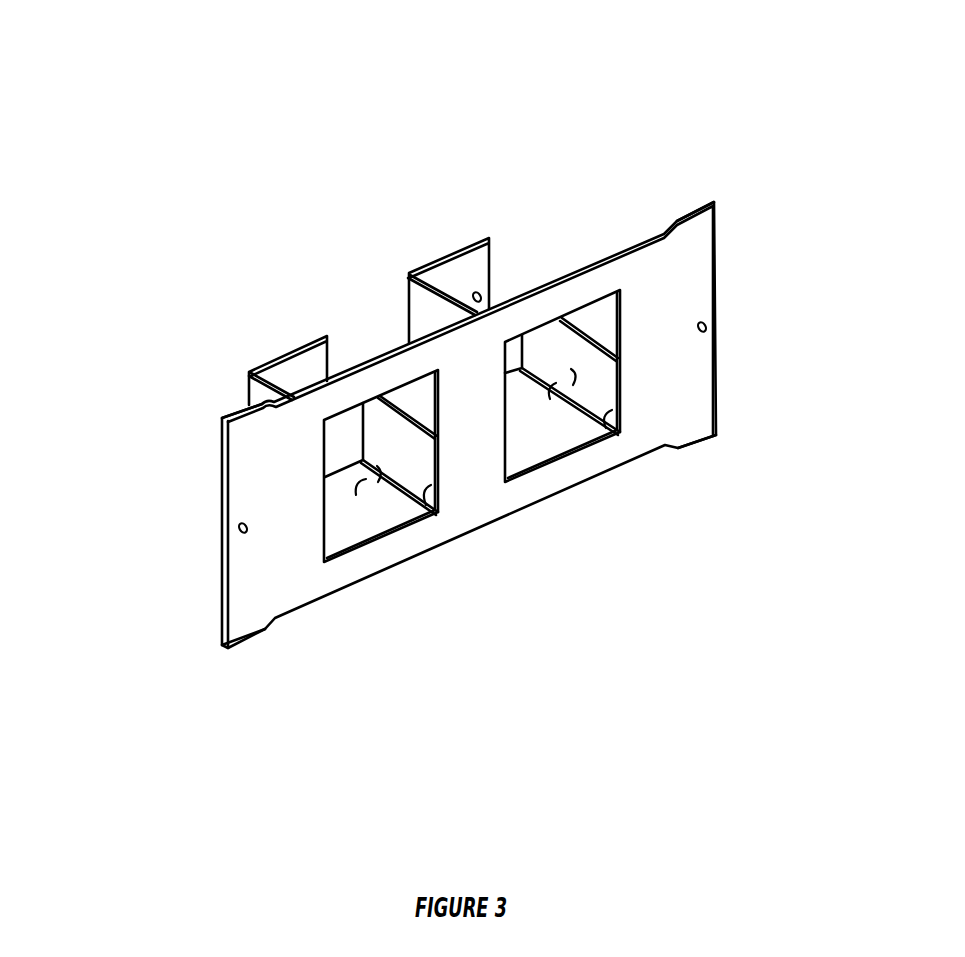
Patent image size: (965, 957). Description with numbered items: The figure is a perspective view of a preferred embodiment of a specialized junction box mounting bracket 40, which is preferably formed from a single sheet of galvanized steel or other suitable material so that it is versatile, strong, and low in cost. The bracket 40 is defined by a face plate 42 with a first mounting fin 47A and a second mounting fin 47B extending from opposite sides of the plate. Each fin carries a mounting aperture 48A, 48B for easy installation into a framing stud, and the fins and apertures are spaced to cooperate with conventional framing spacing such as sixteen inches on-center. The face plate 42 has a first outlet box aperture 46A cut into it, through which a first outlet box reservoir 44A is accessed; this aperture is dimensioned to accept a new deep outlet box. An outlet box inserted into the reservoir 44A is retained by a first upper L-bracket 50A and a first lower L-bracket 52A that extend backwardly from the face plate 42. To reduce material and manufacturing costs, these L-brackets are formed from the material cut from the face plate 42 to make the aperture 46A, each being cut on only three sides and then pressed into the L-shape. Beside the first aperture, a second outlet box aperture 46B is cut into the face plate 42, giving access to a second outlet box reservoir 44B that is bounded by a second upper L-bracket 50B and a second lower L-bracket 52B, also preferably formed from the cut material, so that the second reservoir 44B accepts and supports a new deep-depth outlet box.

The junction box mounting bracket 40 is at (818, 227).
The face plate 42 is at (317, 585).
The first outlet box reservoir 44A is at (357, 518).
The second outlet box reservoir 44B is at (545, 427).
The first outlet box aperture 46A is at (438, 515).
The second outlet box aperture 46B is at (556, 385).
The first mounting fin 47A is at (237, 404).
The second mounting fin 47B is at (722, 186).
The mounting aperture 48A is at (252, 540).
The mounting aperture 48B is at (716, 332).
The first upper L-bracket 50A is at (302, 332).
The second upper L-bracket 50B is at (453, 240).
The first lower L-bracket 52A is at (436, 514).
The second lower L-bracket 52B is at (620, 432).